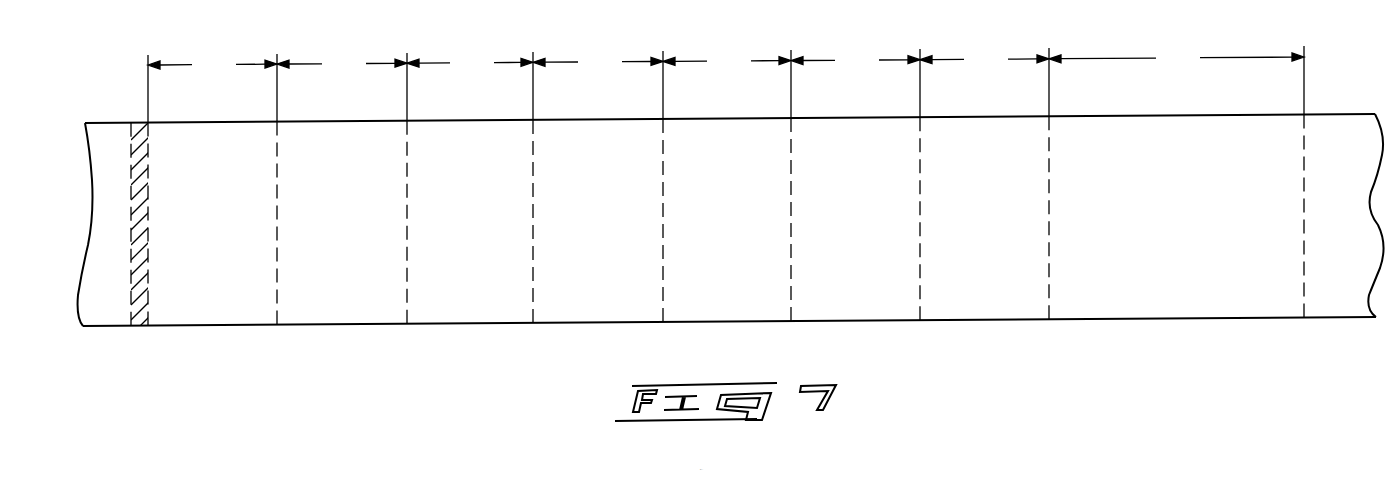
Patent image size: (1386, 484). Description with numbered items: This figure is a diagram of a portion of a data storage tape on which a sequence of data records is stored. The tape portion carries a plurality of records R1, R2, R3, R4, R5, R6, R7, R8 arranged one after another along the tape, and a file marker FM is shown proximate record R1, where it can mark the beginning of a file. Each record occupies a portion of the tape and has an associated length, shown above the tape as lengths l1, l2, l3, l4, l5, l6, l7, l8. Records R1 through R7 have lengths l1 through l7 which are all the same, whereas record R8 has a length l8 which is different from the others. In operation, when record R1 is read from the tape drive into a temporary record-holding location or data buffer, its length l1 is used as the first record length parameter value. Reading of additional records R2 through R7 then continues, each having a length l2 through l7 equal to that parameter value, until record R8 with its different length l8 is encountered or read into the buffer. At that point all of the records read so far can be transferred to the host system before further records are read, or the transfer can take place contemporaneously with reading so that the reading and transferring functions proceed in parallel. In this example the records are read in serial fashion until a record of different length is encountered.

The file marker FM is at (140, 334).
The record R1 is at (238, 223).
The record R2 is at (368, 222).
The record R3 is at (495, 221).
The record R4 is at (624, 220).
The record R5 is at (753, 219).
The record R6 is at (881, 218).
The record R7 is at (1010, 217).
The record R8 is at (1234, 216).
The record length l1 is at (212, 87).
The record length l2 is at (342, 86).
The record length l3 is at (470, 85).
The record length l4 is at (598, 84).
The record length l5 is at (727, 83).
The record length l6 is at (855, 82).
The record length l7 is at (984, 81).
The record length l8 is at (1176, 79).